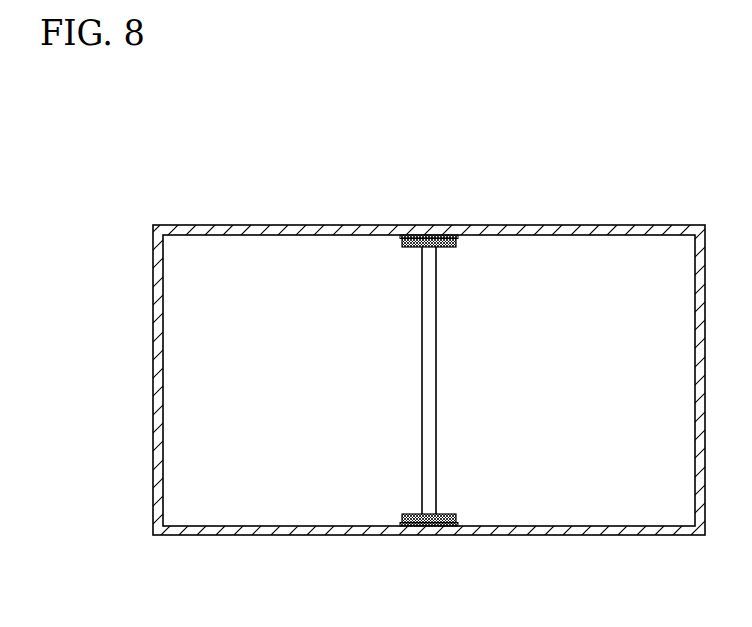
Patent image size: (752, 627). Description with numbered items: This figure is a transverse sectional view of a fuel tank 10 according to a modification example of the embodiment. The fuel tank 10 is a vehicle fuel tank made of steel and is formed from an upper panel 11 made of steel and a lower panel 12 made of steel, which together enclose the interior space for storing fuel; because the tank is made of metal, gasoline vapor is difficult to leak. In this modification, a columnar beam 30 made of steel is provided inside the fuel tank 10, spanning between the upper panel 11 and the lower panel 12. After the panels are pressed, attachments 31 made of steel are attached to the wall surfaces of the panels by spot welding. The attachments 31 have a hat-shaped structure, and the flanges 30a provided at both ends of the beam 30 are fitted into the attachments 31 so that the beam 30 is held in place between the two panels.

The fuel tank 10 is at (96, 170).
The upper panel 11 is at (153, 379).
The lower panel 12 is at (376, 380).
The columnar beam 30 is at (437, 389).
The flange 30a is at (443, 235).
The attachment 31 is at (457, 243).